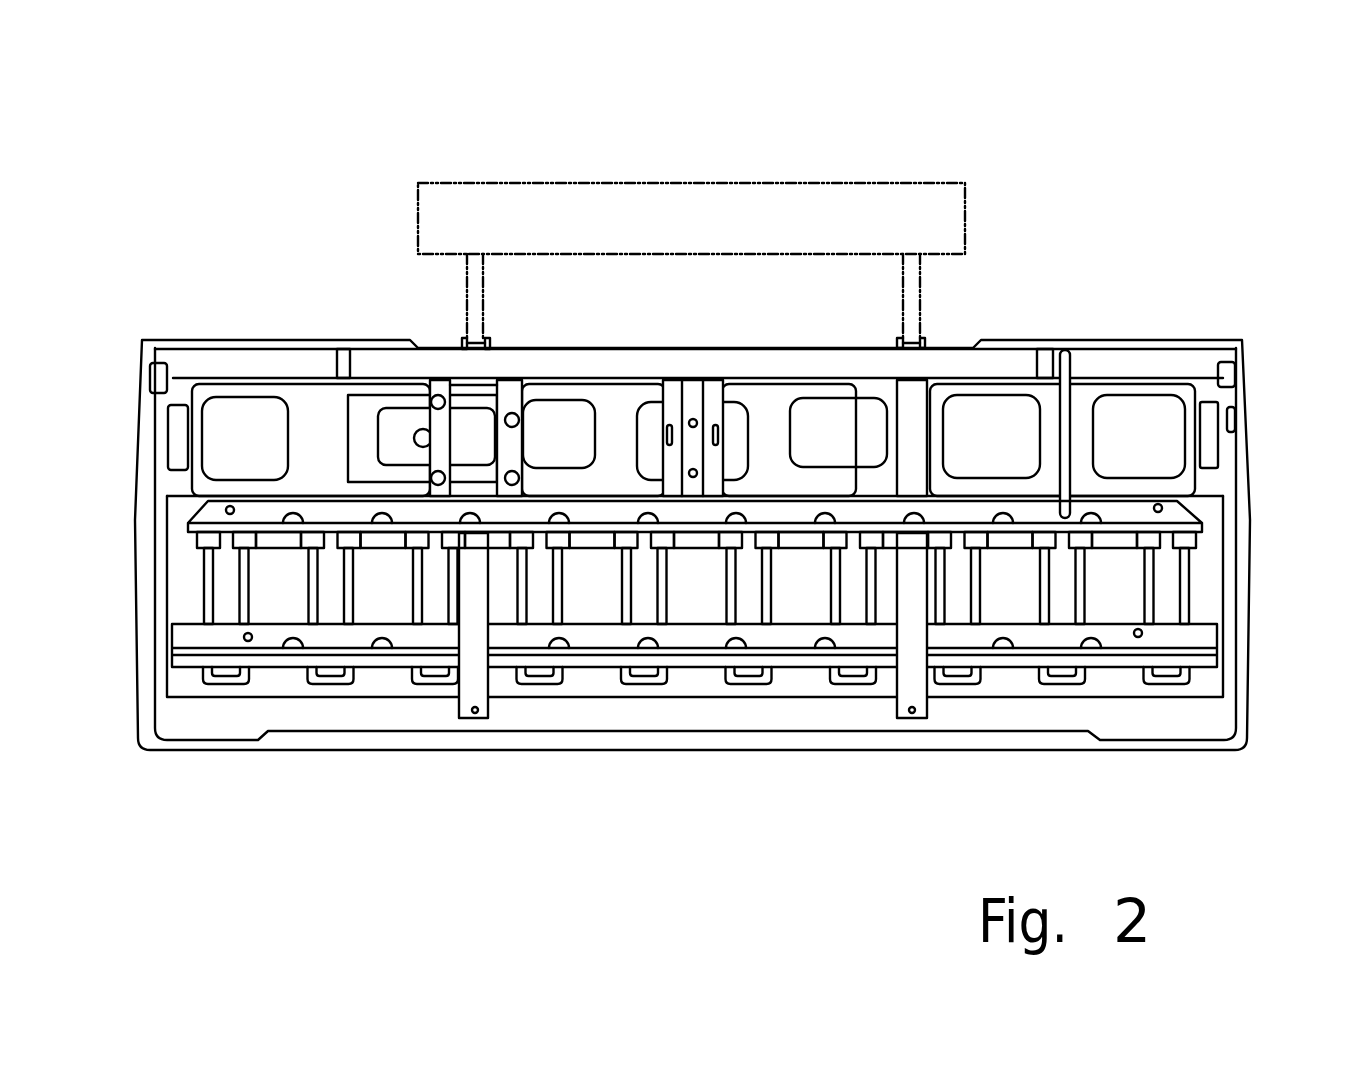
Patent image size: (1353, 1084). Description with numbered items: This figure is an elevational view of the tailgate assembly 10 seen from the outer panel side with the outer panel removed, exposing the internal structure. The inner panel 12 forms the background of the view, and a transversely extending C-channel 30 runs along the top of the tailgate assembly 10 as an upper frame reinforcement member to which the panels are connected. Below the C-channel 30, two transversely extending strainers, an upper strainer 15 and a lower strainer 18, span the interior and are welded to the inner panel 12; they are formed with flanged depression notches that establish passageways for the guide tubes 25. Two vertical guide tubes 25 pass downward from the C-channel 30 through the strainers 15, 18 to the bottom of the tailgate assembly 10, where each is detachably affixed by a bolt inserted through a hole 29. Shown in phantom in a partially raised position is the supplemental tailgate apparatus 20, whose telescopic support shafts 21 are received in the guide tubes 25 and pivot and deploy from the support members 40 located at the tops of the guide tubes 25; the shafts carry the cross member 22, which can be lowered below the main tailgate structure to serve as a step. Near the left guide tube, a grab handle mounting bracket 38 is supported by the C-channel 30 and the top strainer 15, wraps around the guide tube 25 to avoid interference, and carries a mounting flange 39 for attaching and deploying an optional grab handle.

The tailgate assembly 10 is at (256, 188).
The inner panel 12 is at (178, 581).
The upper strainer 15 is at (1173, 515).
The lower strainer 18 is at (1200, 634).
The supplemental tailgate apparatus 20 is at (689, 209).
The telescopic support shafts 21 is at (467, 288).
The cross member 22 is at (660, 205).
The guide tube 25 is at (462, 697).
The hole 29 is at (478, 713).
The C-channel 30 is at (688, 360).
The grab handle mounting bracket 38 is at (468, 392).
The mounting flange 39 is at (378, 420).
The support members 40 is at (492, 346).